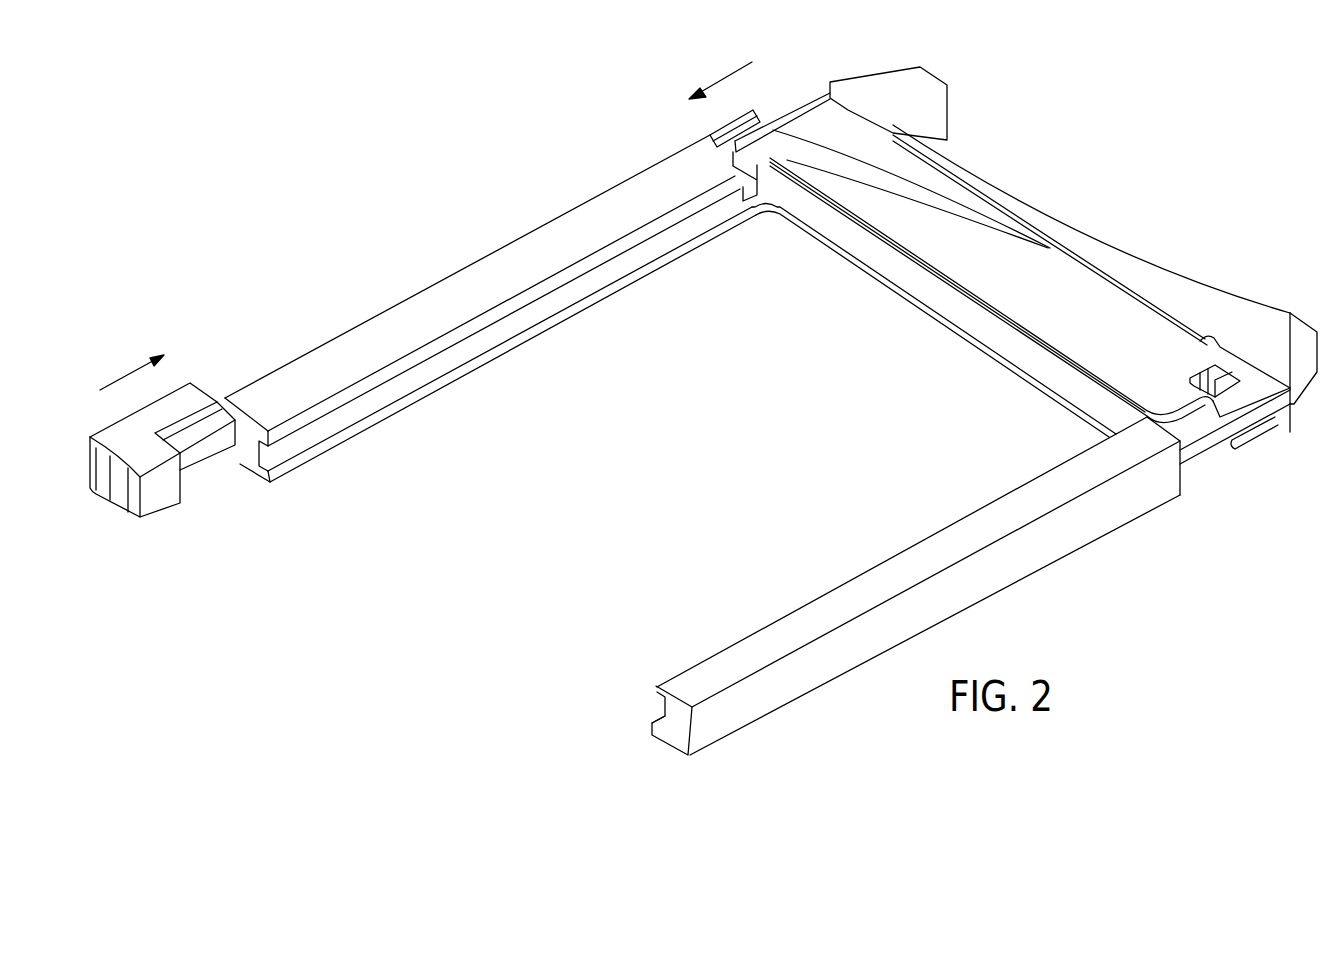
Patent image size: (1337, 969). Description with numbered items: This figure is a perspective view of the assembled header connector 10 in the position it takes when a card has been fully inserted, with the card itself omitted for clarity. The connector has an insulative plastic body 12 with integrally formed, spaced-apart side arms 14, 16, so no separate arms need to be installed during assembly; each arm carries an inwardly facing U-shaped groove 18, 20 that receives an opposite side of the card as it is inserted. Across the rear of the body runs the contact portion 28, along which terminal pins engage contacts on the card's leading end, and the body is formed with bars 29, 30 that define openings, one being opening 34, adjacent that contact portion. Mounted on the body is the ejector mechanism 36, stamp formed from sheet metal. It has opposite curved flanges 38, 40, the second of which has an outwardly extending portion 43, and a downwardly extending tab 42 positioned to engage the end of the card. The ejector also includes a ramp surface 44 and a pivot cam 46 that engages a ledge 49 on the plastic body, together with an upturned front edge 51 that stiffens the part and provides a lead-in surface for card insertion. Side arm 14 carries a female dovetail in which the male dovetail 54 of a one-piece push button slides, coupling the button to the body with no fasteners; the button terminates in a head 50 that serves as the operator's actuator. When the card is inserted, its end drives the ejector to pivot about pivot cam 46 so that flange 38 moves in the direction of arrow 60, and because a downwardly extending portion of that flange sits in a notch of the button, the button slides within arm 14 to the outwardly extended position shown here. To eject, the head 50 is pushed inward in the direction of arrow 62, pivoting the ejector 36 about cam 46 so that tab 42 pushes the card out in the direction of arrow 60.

The header connector 10 is at (462, 118).
The insulative plastic body 12 is at (531, 212).
The side arm 14 is at (385, 325).
The side arm 16 is at (735, 712).
The U-shaped groove 18 is at (415, 375).
The U-shaped groove 20 is at (662, 707).
The contact portion 28 is at (955, 298).
The bar 29 is at (820, 92).
The bar 30 is at (1287, 430).
The opening 34 is at (1195, 448).
The ejector mechanism 36 is at (1082, 300).
The curved flange 38 is at (764, 118).
The curved flange 40 is at (1240, 452).
The downwardly extending tab 42 is at (1222, 380).
The outwardly extending portion 43 is at (1257, 433).
The ramp surface 44 is at (921, 207).
The pivot cam 46 is at (1068, 245).
The ledge 49 is at (1003, 208).
The head 50 is at (118, 487).
The upturned front edge 51 is at (1093, 369).
The male dovetail 54 is at (215, 455).
The arrow 60 is at (728, 70).
The arrow 62 is at (141, 362).